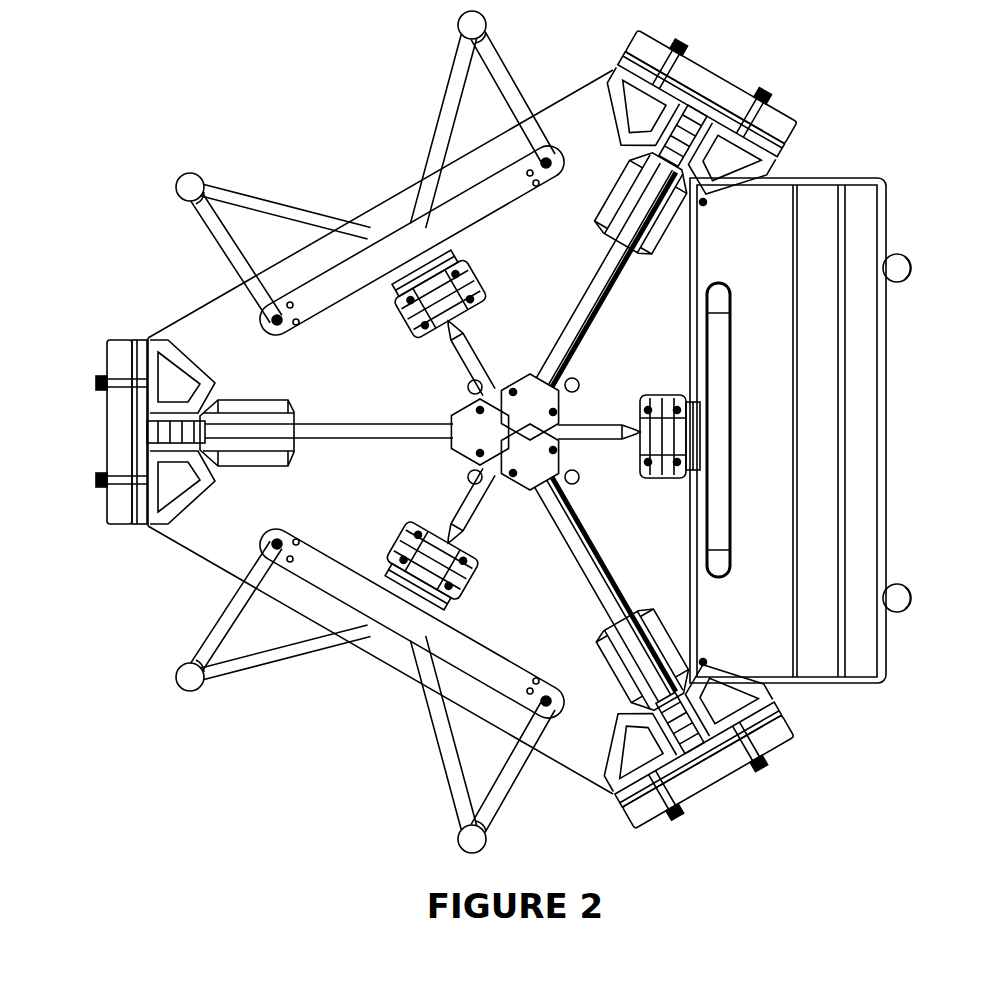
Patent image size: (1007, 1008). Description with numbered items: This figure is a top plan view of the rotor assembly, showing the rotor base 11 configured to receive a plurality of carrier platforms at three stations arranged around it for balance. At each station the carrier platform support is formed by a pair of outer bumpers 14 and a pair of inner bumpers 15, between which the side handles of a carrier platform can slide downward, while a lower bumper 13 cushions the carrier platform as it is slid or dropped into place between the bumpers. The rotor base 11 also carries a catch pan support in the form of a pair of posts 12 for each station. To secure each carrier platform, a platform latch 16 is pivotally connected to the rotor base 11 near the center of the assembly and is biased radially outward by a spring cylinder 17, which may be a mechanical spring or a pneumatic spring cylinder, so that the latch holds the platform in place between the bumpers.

The rotor base 11 is at (207, 323).
The posts 12 is at (468, 31).
The lower bumper 13 is at (420, 238).
The outer bumpers 14 is at (163, 383).
The inner bumpers 15 is at (633, 190).
The platform latch 16 is at (400, 310).
The spring cylinder 17 is at (477, 362).